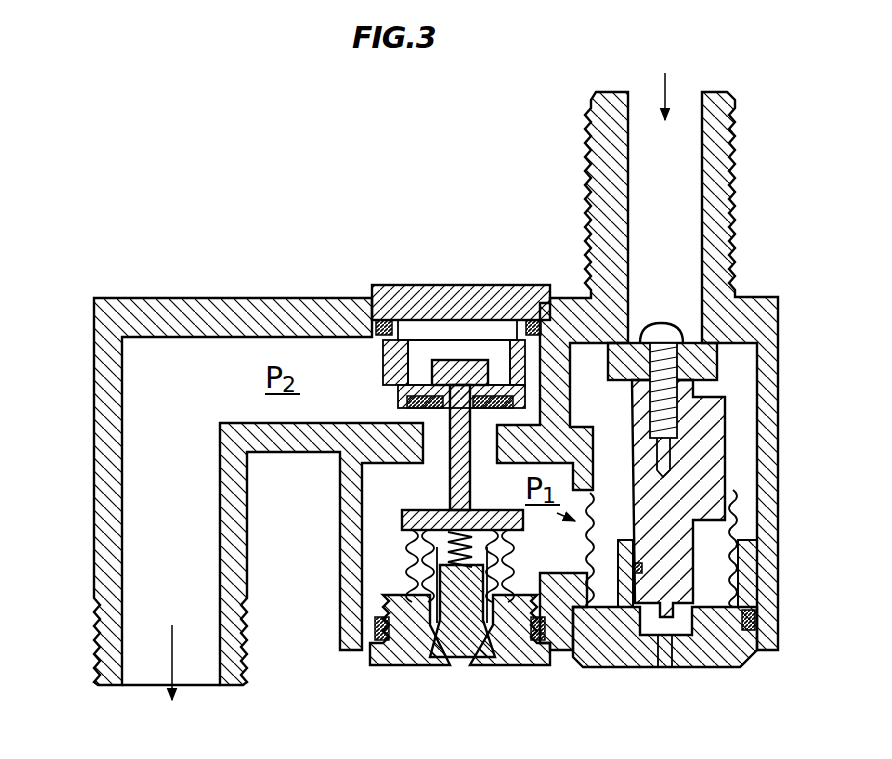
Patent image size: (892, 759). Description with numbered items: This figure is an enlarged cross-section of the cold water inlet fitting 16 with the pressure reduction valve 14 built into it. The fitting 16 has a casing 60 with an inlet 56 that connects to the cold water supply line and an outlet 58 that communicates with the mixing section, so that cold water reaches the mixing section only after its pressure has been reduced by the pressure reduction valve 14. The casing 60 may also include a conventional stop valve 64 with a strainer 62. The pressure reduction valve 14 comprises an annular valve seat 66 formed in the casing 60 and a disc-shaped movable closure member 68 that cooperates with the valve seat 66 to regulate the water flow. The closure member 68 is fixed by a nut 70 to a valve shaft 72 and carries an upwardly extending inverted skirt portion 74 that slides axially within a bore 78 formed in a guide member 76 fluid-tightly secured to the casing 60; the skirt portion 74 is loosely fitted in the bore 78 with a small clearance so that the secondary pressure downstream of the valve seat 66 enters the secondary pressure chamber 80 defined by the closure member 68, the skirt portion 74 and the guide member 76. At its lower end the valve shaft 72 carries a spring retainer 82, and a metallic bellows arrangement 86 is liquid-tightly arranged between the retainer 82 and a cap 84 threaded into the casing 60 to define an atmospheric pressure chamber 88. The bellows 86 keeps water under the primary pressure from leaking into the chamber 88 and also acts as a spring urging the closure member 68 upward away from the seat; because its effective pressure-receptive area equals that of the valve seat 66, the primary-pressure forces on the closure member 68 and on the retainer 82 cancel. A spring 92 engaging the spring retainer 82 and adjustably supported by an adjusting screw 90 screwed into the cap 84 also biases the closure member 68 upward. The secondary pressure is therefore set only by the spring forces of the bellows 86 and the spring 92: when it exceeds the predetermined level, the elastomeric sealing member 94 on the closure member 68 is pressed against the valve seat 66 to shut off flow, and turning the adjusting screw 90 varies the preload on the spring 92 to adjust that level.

The pressure reduction valve 14 is at (458, 680).
The cold water inlet fitting 16 is at (193, 215).
The inlet 56 is at (590, 158).
The outlet 58 is at (97, 620).
The casing 60 is at (250, 297).
The strainer 62 is at (758, 543).
The stop valve 64 is at (684, 678).
The annular valve seat 66 is at (474, 540).
The movable closure member 68 is at (400, 395).
The nut 70 is at (435, 360).
The valve shaft 72 is at (450, 487).
The inverted skirt portion 74 is at (490, 362).
The guide member 76 is at (553, 298).
The bore 78 is at (517, 330).
The secondary pressure chamber 80 is at (458, 330).
The spring retainer 82 is at (410, 515).
The cap 84 is at (548, 652).
The metallic bellows arrangement 86 is at (508, 550).
The atmospheric pressure chamber 88 is at (412, 545).
The adjusting screw 90 is at (440, 665).
The spring 92 is at (480, 660).
The elastomeric sealing member 94 is at (400, 413).